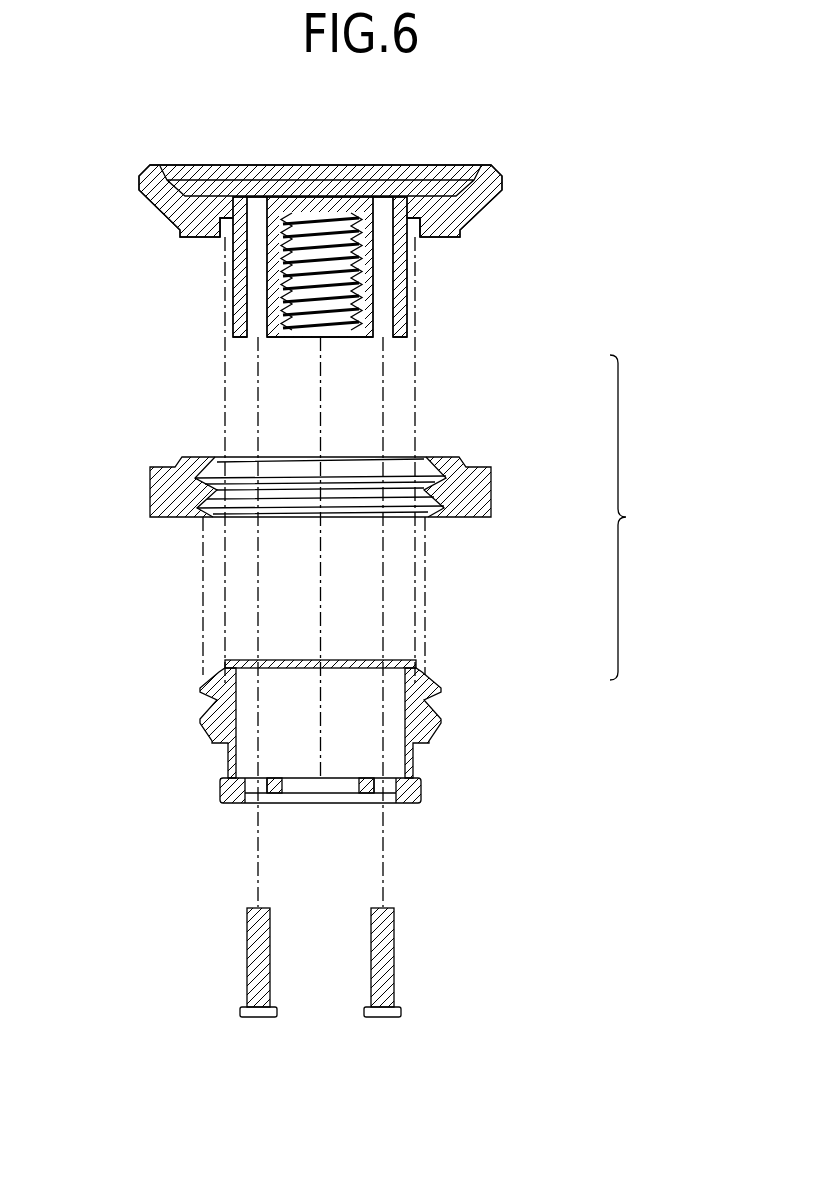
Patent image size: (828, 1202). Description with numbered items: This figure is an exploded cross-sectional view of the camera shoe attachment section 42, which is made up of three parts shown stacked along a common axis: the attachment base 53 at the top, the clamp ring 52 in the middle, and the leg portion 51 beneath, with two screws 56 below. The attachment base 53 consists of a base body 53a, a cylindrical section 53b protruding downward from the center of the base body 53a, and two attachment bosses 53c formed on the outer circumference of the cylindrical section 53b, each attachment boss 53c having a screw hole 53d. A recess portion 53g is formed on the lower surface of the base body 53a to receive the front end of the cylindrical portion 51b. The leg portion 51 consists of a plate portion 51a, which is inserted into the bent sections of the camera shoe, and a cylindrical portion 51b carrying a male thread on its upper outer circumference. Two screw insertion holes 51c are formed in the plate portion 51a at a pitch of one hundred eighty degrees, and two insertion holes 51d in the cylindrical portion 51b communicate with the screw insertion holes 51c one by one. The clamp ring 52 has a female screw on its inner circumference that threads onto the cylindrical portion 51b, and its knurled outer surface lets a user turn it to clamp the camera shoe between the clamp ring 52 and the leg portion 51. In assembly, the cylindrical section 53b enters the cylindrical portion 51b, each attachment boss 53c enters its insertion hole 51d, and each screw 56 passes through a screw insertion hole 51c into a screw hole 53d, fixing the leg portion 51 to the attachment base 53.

The camera shoe attachment section 42 is at (635, 517).
The leg portion 51 is at (368, 729).
The plate portion 51a is at (222, 793).
The cylindrical portion 51b is at (207, 717).
The screw insertion holes 51c is at (253, 805).
The insertion holes 51d is at (247, 660).
The clamp ring 52 is at (490, 487).
The attachment base 53 is at (371, 283).
The base body 53a is at (497, 173).
The cylindrical section 53b is at (365, 260).
The attachment bosses 53c is at (243, 322).
The screw hole 53d is at (263, 338).
The recess portion 53g is at (220, 240).
The screw 56 is at (240, 1012).